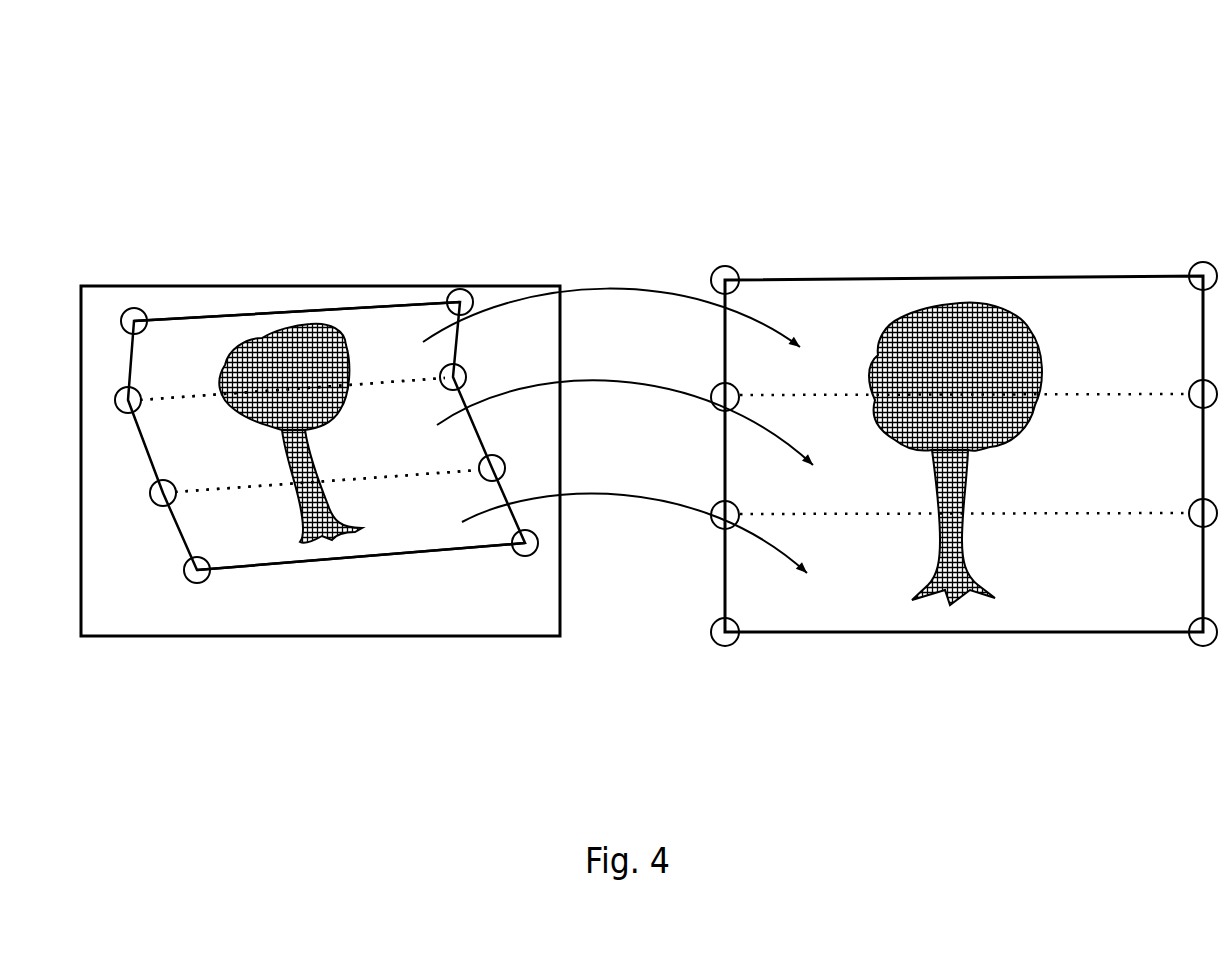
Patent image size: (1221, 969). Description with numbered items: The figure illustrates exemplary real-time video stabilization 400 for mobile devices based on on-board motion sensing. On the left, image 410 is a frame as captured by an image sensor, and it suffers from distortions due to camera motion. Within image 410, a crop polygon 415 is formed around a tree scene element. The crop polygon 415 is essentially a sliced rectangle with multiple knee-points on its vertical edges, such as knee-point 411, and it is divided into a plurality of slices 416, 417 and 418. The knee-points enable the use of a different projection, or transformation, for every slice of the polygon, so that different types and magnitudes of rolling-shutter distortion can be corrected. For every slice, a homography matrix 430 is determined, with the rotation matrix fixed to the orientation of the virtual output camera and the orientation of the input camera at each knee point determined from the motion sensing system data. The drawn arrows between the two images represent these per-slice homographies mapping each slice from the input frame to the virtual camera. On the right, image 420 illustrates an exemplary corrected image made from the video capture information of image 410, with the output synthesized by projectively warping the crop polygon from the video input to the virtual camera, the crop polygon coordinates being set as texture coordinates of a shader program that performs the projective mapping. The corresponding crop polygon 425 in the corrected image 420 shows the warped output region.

The real-time video stabilization 400 is at (645, 59).
The image 410 is at (358, 702).
The knee-point 411 is at (143, 500).
The crop polygon 415 is at (177, 298).
The slice 416 is at (411, 342).
The slice 417 is at (411, 439).
The slice 418 is at (432, 529).
The image 420 is at (996, 695).
The crop polygon of output image 425 is at (845, 640).
The homography matrix 430 is at (608, 238).